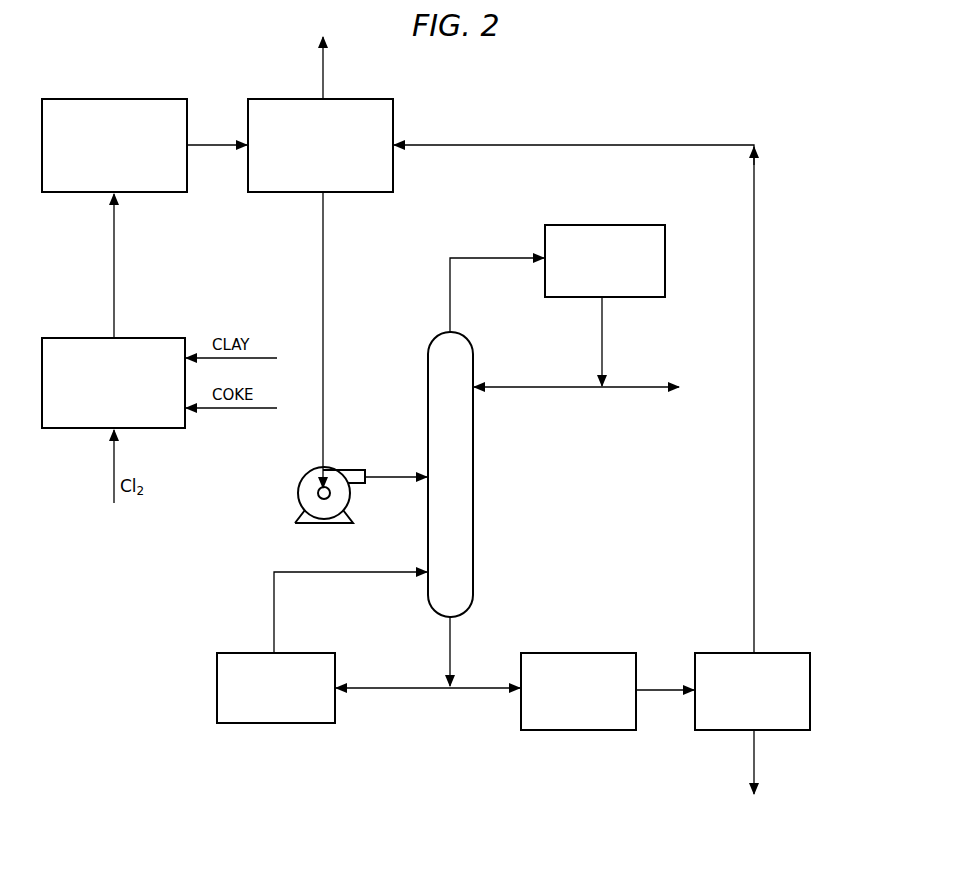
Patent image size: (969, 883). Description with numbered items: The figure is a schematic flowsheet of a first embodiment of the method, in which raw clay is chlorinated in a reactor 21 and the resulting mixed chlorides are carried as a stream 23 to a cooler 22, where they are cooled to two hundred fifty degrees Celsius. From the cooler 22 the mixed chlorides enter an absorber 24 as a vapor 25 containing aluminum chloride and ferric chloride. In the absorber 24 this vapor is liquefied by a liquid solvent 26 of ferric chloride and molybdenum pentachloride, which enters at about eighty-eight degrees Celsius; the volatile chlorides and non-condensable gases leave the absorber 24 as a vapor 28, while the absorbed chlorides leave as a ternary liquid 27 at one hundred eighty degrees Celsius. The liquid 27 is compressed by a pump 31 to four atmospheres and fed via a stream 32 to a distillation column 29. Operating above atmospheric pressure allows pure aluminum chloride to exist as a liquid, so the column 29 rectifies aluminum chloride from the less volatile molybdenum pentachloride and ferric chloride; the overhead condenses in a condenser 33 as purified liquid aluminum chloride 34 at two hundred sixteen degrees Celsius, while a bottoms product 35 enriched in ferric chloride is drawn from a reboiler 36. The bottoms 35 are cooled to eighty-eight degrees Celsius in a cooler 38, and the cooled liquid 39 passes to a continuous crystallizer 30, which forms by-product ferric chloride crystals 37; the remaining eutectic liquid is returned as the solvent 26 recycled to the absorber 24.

The reactor 21 is at (72, 430).
The cooler 22 is at (88, 99).
The stream 23 is at (114, 258).
The absorber 24 is at (278, 99).
The vapor 25 is at (218, 150).
The liquid solvent 26 is at (486, 145).
The liquid 27 is at (323, 290).
The vapor 28 is at (323, 70).
The distillation column 29 is at (473, 525).
The continuous crystallizer 30 is at (796, 653).
The pump 31 is at (297, 493).
The stream 32 is at (390, 474).
The condenser 33 is at (652, 225).
The purified liquid aluminum chloride 34 is at (644, 387).
The bottoms product 35 is at (412, 690).
The reboiler 36 is at (232, 653).
The ferric chloride crystals 37 is at (754, 766).
The cooler 38 is at (614, 653).
The liquid 39 is at (666, 692).